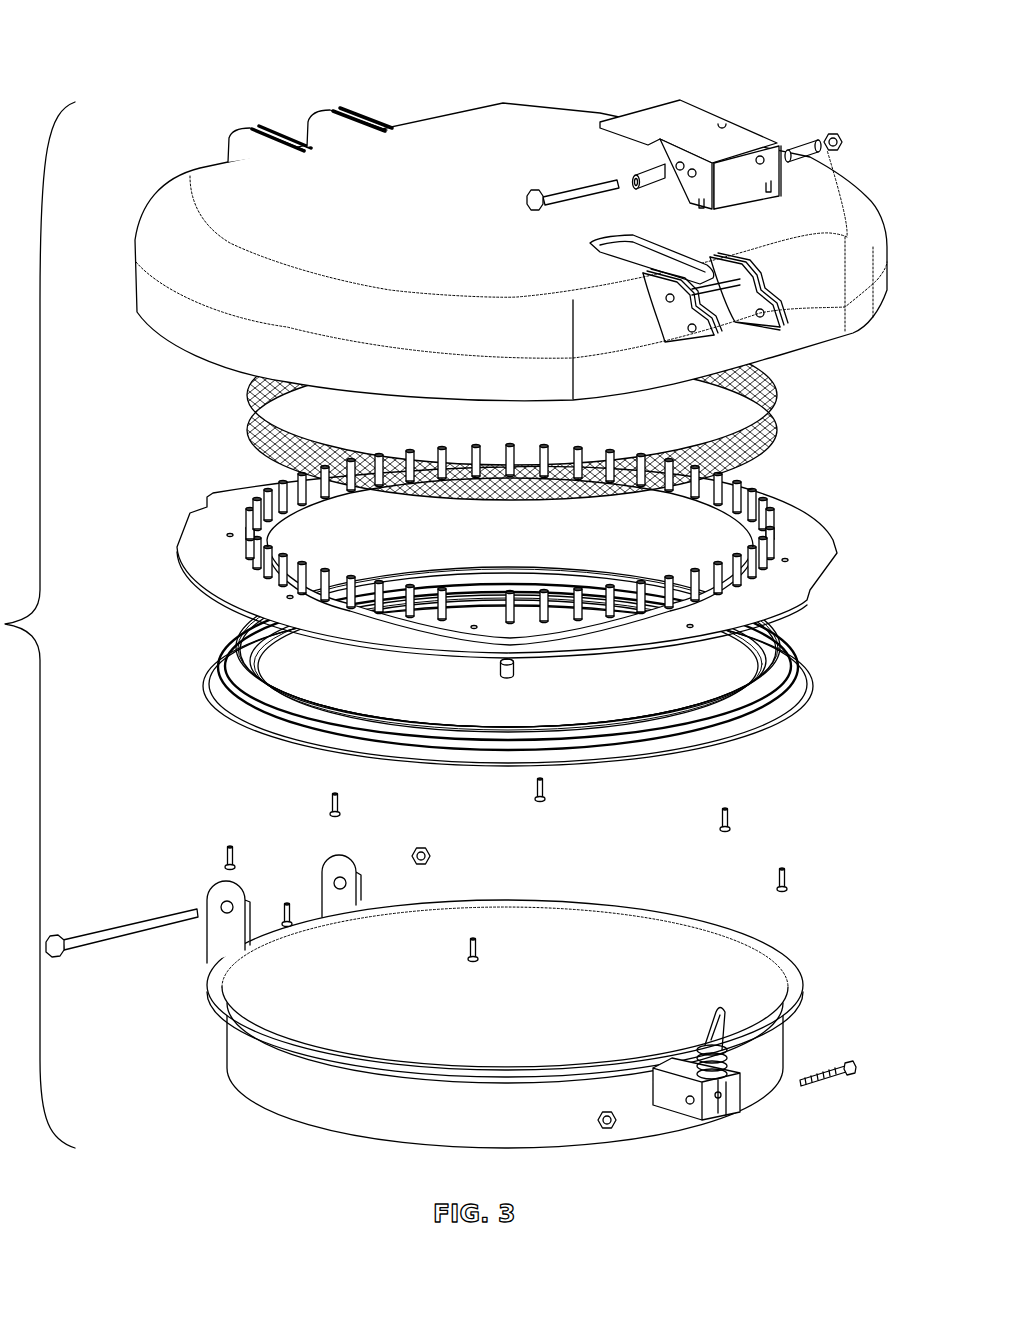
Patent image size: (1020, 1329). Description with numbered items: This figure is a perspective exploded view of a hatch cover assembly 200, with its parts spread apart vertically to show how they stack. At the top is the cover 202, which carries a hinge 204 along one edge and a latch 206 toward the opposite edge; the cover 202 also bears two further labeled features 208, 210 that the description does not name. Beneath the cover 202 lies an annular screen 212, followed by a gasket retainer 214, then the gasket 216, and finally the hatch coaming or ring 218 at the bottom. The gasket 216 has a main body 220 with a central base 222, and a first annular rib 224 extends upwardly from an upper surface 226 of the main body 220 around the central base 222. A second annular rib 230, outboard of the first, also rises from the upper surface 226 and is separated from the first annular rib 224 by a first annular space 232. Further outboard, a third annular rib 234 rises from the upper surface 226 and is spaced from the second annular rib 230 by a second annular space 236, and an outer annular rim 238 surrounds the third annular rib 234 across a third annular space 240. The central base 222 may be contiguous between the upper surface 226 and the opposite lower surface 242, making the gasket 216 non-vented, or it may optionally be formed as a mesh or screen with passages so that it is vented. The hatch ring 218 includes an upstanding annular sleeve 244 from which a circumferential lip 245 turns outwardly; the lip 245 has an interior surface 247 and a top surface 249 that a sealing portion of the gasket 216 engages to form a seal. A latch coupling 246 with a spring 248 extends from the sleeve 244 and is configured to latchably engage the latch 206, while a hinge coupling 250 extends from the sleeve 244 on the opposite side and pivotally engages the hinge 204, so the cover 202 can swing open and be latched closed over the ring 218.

The hatch cover assembly 200 is at (142, 30).
The cover 202 is at (528, 228).
The hinge 204 is at (355, 106).
The latch 206 is at (749, 132).
The top surface 208 is at (450, 106).
The clip assembly 210 is at (827, 312).
The annular screen 212 is at (778, 418).
The gasket retainer 214 is at (833, 540).
The gasket 216 is at (513, 696).
The hatch coaming or ring 218 is at (474, 1019).
The main body 220 is at (727, 665).
The central base 222 is at (665, 693).
The first annular rib 224 is at (242, 694).
The upper surface 226 is at (250, 652).
The second annular rib 230 is at (240, 676).
The first annular space 232 is at (236, 664).
The third annular rib 234 is at (238, 628).
The second annular space 236 is at (250, 690).
The outer annular rim 238 is at (312, 732).
The third annular space 240 is at (806, 660).
The lower surface 242 is at (600, 767).
The upstanding annular sleeve 244 is at (297, 1093).
The circumferential lip 245 is at (770, 948).
The latch coupling 246 is at (678, 1113).
The interior surface 247 is at (728, 950).
The spring 248 is at (757, 1055).
The top surface 249 is at (215, 1012).
The hinge coupling 250 is at (218, 937).